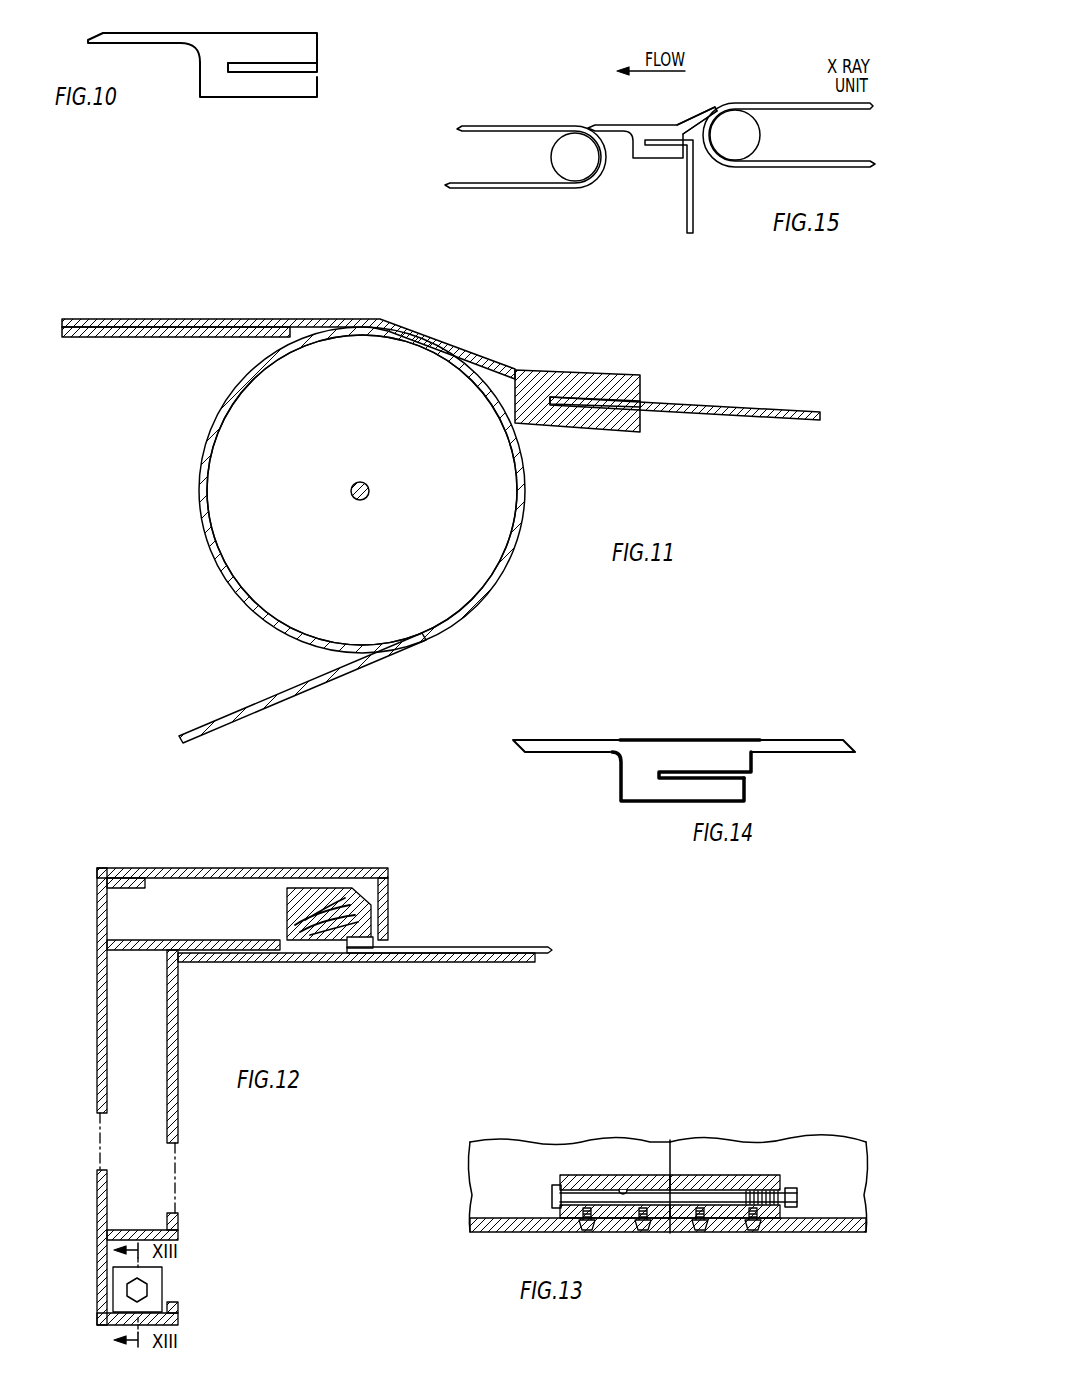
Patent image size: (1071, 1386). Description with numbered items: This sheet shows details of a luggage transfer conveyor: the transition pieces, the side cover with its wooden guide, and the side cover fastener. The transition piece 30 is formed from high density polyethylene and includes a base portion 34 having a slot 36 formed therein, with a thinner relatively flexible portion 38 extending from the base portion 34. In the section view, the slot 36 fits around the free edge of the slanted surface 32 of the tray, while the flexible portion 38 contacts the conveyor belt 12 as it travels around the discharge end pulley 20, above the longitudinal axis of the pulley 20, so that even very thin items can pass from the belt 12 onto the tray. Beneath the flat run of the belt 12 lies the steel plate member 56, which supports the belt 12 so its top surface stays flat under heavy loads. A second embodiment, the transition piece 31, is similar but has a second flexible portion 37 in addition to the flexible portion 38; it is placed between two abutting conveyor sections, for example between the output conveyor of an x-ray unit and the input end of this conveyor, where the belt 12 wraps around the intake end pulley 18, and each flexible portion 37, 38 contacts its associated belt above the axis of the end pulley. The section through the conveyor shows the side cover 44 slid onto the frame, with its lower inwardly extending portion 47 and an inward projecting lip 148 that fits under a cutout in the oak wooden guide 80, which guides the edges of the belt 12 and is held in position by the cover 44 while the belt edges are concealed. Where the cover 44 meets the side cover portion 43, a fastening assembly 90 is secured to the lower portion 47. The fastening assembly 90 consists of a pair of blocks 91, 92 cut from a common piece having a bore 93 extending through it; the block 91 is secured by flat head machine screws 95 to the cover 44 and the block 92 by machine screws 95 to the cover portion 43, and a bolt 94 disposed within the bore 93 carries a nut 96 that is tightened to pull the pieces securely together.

In FIG. 15, the conveyor belt 12 is at (483, 126).
In FIG. 11, the conveyor belt 12 is at (293, 515).
In FIG. 12, the conveyor belt 12 is at (478, 947).
In FIG. 15, the intake end pulley 18 is at (551, 157).
In FIG. 11, the discharge end pulley 20 is at (206, 516).
In FIG. 10, the transition piece 30 is at (202, 68).
In FIG. 11, the transition piece 30 is at (548, 366).
In FIG. 14, the transition piece 31 is at (684, 756).
In FIG. 11, the slanted surface 32 is at (726, 408).
In FIG. 10, the base portion 34 is at (270, 40).
In FIG. 14, the base portion 34 is at (642, 745).
In FIG. 10, the slot 36 is at (262, 70).
In FIG. 14, the slot 36 is at (714, 778).
In FIG. 15, the second flexible portion 37 is at (706, 106).
In FIG. 14, the second flexible portion 37 is at (822, 744).
In FIG. 10, the flexible portion 38 is at (137, 33).
In FIG. 15, the flexible portion 38 is at (603, 127).
In FIG. 14, the flexible portion 38 is at (540, 738).
In FIG. 13, the side cover portion 43 is at (783, 1147).
In FIG. 12, the side cover 44 is at (262, 868).
In FIG. 13, the side cover 44 is at (527, 1147).
In FIG. 13, the lower inwardly extending portion 47 is at (504, 1233).
In FIG. 11, the steel plate member 56 is at (160, 339).
In FIG. 12, the steel plate member 56 is at (403, 962).
In FIG. 12, the wooden guide 80 is at (355, 898).
In FIG. 13, the fastening assembly 90 is at (686, 1155).
In FIG. 12, the block 91 is at (152, 1286).
In FIG. 13, the block 91 is at (601, 1178).
In FIG. 13, the block 92 is at (745, 1180).
In FIG. 13, the bore 93 is at (632, 1186).
In FIG. 13, the bolt 94 is at (684, 1198).
In FIG. 13, the flat head machine screws 95 is at (642, 1233).
In FIG. 13, the nut 96 is at (793, 1191).
In FIG. 12, the inward projecting lip 148 is at (360, 952).